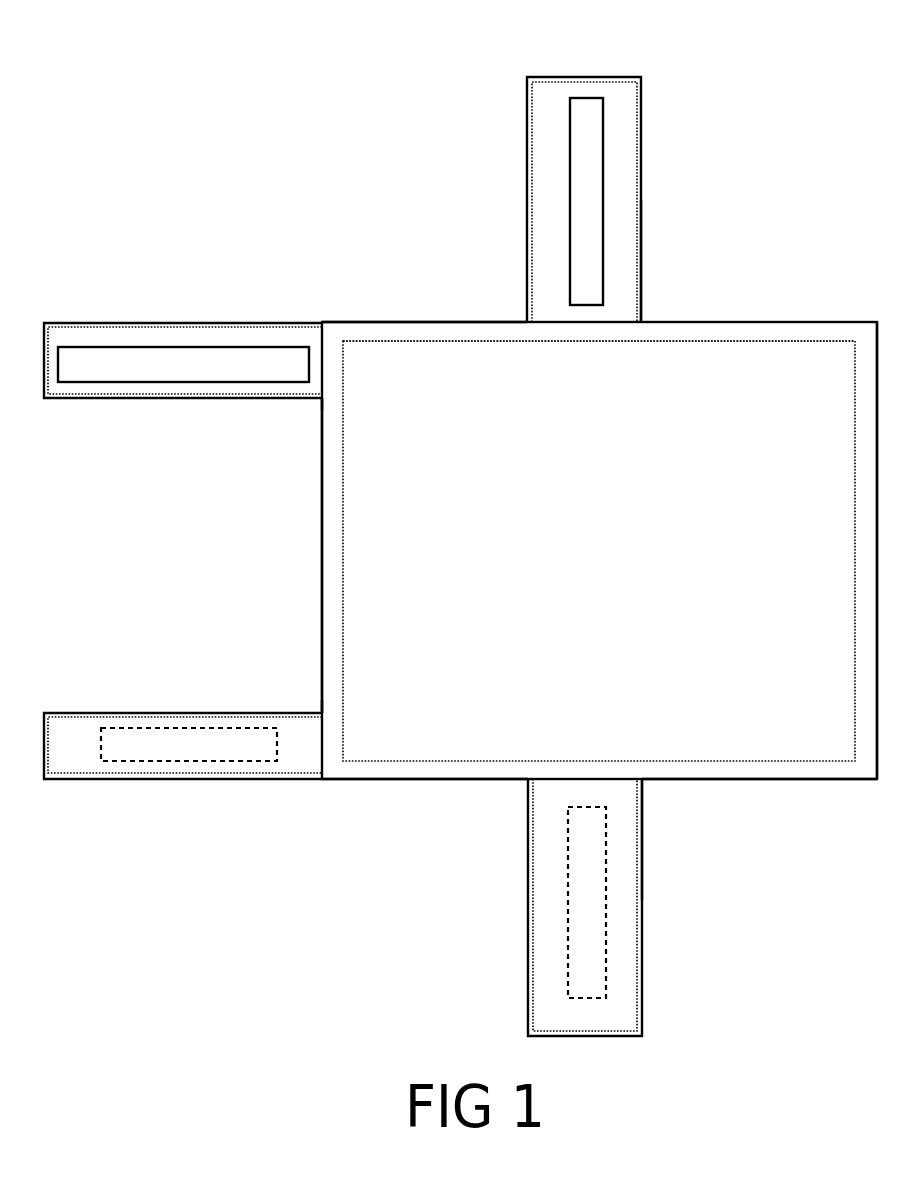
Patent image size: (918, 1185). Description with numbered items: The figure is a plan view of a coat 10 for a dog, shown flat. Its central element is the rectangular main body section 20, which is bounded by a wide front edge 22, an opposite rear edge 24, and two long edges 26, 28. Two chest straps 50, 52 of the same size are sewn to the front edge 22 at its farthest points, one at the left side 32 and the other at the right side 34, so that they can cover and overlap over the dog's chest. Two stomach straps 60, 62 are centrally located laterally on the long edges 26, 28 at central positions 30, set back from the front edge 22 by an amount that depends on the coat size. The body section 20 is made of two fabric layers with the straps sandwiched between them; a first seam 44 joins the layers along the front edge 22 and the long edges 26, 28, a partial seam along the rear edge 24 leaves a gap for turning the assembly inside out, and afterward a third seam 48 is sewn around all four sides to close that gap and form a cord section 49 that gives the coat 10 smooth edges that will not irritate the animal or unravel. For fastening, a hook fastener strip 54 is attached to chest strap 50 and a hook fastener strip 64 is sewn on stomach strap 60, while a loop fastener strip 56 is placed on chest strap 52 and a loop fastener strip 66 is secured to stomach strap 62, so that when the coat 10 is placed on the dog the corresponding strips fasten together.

The coat 10 is at (333, 193).
The rectangular main body section 20 is at (597, 547).
The front edge 22 is at (315, 500).
The rear edge 24 is at (883, 743).
The long edge 26 is at (413, 783).
The long edge 28 is at (483, 318).
The central position 30 is at (642, 315).
The left side farthest point 32 is at (315, 703).
The right side farthest point 34 is at (313, 403).
The first seam 44 is at (810, 773).
The third seam 48 is at (465, 758).
The cord section 49 is at (433, 333).
The chest strap 50 is at (145, 320).
The chest strap 52 is at (187, 780).
The hook fastener strip 54 is at (140, 365).
The loop fastener strip 56 is at (162, 747).
The stomach strap 60 is at (617, 108).
The stomach strap 62 is at (646, 978).
The hook fastener strip 64 is at (582, 208).
The loop fastener strip 66 is at (587, 927).